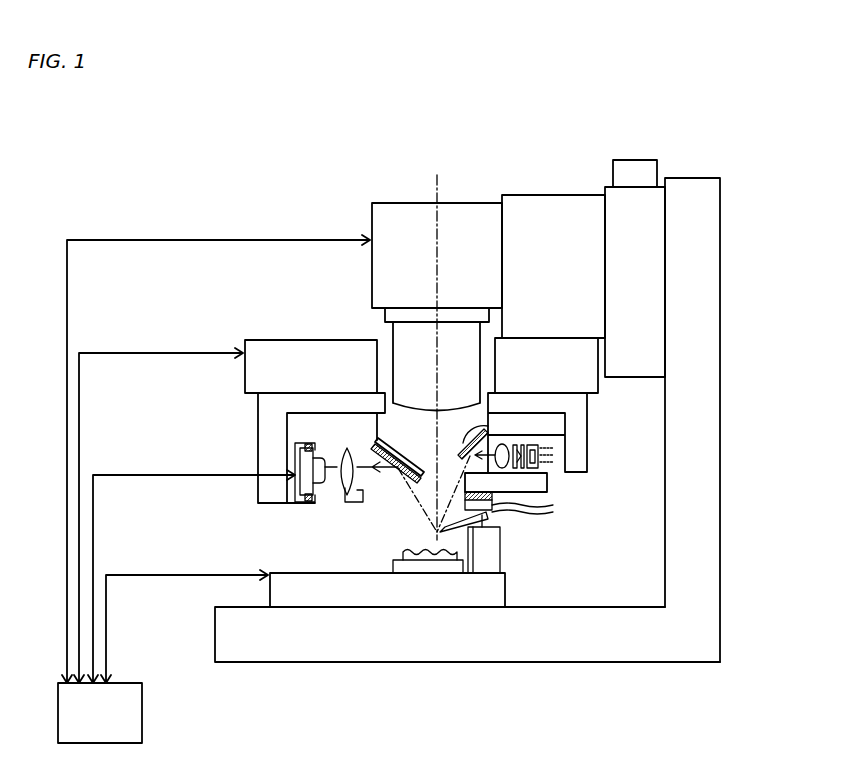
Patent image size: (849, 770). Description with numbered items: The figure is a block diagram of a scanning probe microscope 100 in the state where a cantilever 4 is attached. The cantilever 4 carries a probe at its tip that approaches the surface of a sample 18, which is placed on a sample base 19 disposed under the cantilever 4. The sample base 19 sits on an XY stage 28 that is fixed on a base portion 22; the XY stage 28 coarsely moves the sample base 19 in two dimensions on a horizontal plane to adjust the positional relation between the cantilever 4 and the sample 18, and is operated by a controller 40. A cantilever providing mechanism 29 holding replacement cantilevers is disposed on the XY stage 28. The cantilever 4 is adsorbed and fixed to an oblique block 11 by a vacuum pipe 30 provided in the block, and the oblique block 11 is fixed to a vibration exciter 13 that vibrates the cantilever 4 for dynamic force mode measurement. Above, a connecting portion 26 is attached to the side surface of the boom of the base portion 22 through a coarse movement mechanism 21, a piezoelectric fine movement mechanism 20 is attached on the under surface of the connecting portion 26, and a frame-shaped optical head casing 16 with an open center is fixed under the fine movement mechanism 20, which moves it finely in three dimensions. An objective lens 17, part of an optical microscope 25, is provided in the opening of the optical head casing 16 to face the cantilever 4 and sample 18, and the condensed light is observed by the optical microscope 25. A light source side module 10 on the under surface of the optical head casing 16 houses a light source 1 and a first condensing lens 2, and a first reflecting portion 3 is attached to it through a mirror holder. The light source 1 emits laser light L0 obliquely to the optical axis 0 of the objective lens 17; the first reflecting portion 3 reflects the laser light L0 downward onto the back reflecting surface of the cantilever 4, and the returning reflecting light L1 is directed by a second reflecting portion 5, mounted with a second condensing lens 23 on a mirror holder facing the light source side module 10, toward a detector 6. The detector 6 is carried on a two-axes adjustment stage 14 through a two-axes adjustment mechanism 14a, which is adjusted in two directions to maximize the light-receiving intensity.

The scanning probe microscope 100 is at (416, 441).
The light source 1 is at (545, 468).
The first condensing lens 2 is at (490, 497).
The first reflecting portion 3 is at (540, 450).
The cantilever 4 is at (468, 533).
The second reflecting portion 5 is at (382, 445).
The detector 6 is at (318, 473).
The light source side module 10 is at (553, 420).
The oblique block 11 is at (487, 520).
The vibration exciter 13 is at (537, 508).
The two-axes adjustment stage 14 is at (168, 447).
The two-axes adjustment mechanism 14a is at (313, 466).
The optical head casing 16 is at (270, 420).
The objective lens 17 is at (407, 353).
The sample 18 is at (417, 573).
The sample base 19 is at (392, 571).
The fine movement mechanism 20 is at (257, 360).
The coarse movement mechanism 21 is at (645, 248).
The base portion 22 is at (702, 312).
The second condensing lens 23 is at (345, 447).
The optical microscope 25 is at (387, 230).
The connecting portion 26 is at (598, 237).
The XY stage 28 is at (280, 592).
The cantilever providing mechanism 29 is at (480, 560).
The vacuum pipe 30 is at (547, 512).
The controller 40 is at (142, 713).
The optical axis 0 is at (445, 354).
The laser light L0 is at (443, 468).
The reflecting light L1 is at (393, 492).